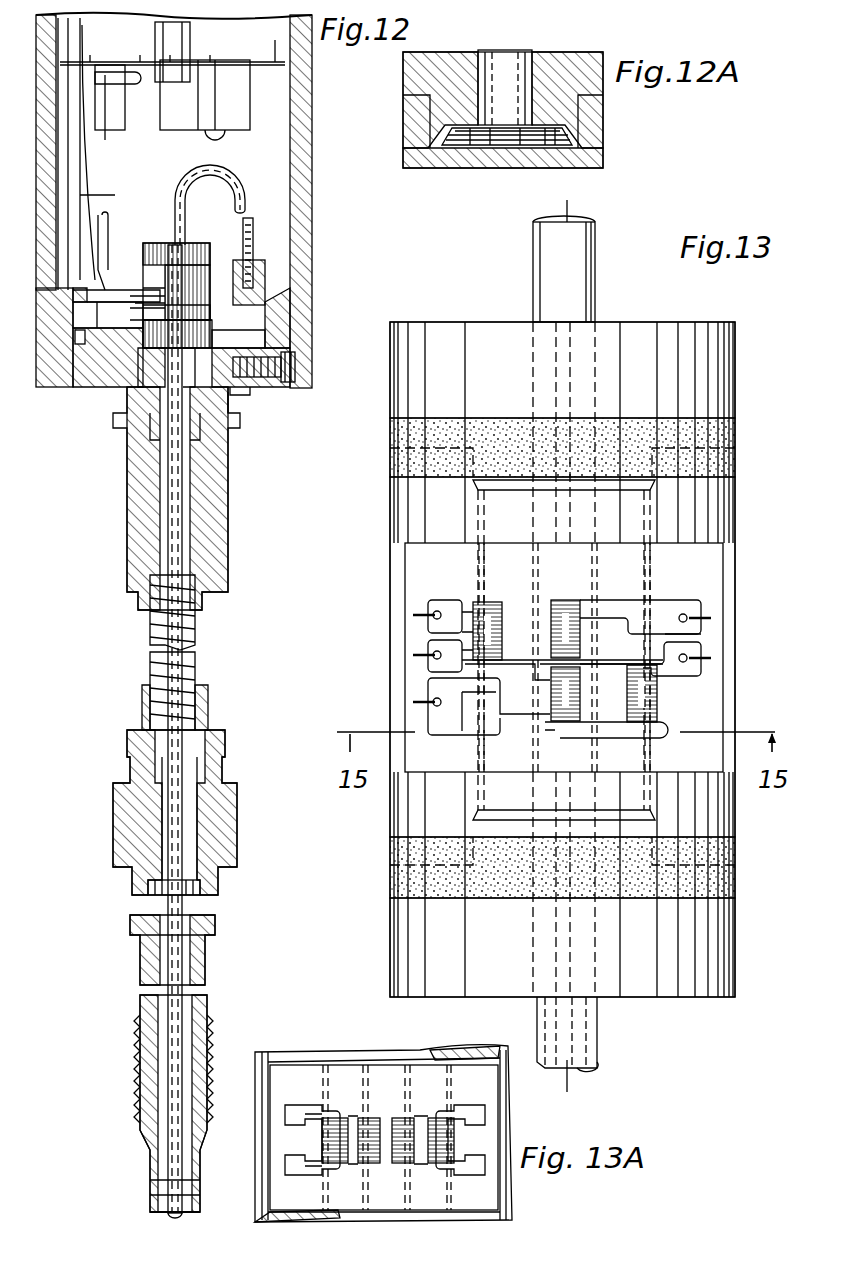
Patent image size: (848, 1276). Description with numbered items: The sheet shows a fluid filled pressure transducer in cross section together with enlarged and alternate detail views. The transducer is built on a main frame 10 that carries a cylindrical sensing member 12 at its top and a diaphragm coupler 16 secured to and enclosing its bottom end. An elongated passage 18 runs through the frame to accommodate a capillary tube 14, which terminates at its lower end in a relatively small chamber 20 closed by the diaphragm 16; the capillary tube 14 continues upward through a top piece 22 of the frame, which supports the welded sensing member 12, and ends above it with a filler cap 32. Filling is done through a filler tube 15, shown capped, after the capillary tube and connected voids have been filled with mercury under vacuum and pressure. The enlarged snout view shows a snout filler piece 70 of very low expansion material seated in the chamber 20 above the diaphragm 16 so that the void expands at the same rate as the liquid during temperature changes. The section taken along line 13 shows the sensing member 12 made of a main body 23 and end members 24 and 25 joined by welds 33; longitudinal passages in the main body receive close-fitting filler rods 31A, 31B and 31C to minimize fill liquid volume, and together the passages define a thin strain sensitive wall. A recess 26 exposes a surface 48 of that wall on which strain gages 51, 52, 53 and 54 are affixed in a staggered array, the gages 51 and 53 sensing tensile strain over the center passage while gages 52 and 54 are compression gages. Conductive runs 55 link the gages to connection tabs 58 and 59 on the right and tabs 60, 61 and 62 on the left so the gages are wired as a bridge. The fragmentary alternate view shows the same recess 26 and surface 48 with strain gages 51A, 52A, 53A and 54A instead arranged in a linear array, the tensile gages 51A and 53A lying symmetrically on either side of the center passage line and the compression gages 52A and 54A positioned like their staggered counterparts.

In FIG. 12, the main frame 10 is at (118, 512).
In FIG. 12, the sensing member 12 is at (158, 240).
In FIG. 13, the sensing member 12 is at (718, 316).
In FIG. 12, the section line 13— 13 is at (128, 196).
In FIG. 12, the capillary tube 14 is at (186, 496).
In FIG. 12A, the capillary tube 14 is at (500, 65).
In FIG. 13, the capillary tube 14 is at (601, 1036).
In FIG. 12, the filler tube 15 is at (258, 196).
In FIG. 13, the filler tube 15 is at (598, 290).
In FIG. 12, the diaphragm coupler 16 is at (152, 1212).
In FIG. 12A, the diaphragm coupler 16 is at (455, 170).
In FIG. 12, the elongated passage 18 is at (200, 950).
In FIG. 12, the chamber 20 is at (152, 1178).
In FIG. 12A, the chamber 20 is at (575, 130).
In FIG. 12, the top piece 22 is at (250, 395).
In FIG. 12, the main body 23 is at (212, 314).
In FIG. 13, the main body 23 is at (738, 508).
In FIG. 12, the end member 24 is at (214, 335).
In FIG. 13, the end member 24 is at (389, 922).
In FIG. 12, the end member 25 is at (215, 247).
In FIG. 13, the end member 25 is at (389, 400).
In FIG. 13, the recess 26 is at (712, 570).
In FIG. 13A, the recess 26 is at (486, 1196).
In FIG. 13, the filler rod 31A is at (482, 780).
In FIG. 13, the filler rod 31B is at (537, 792).
In FIG. 13, the filler rod 31C is at (648, 798).
In FIG. 12, the filler cap 32 is at (262, 273).
In FIG. 13, the weld 33 is at (738, 432).
In FIG. 13, the surface 48 is at (420, 580).
In FIG. 13A, the surface 48 is at (280, 1075).
In FIG. 13, the strain gage 51 is at (576, 598).
In FIG. 13, the strain gage 52 is at (477, 600).
In FIG. 13, the strain gage 53 is at (566, 724).
In FIG. 13, the strain gage 54 is at (660, 702).
In FIG. 13, the conductive runs 55 is at (700, 600).
In FIG. 13, the connection tab 58 is at (704, 632).
In FIG. 13, the connection tab 59 is at (706, 676).
In FIG. 13, the connection tab 60 is at (430, 598).
In FIG. 13, the connection tab 61 is at (430, 640).
In FIG. 13, the connection tab 62 is at (430, 684).
In FIG. 12A, the snout filler piece 70 is at (505, 140).
In FIG. 13A, the strain gage 51A is at (362, 1116).
In FIG. 13A, the strain gage 52A is at (320, 1116).
In FIG. 13A, the strain gage 53A is at (400, 1116).
In FIG. 13A, the strain gage 54A is at (445, 1116).